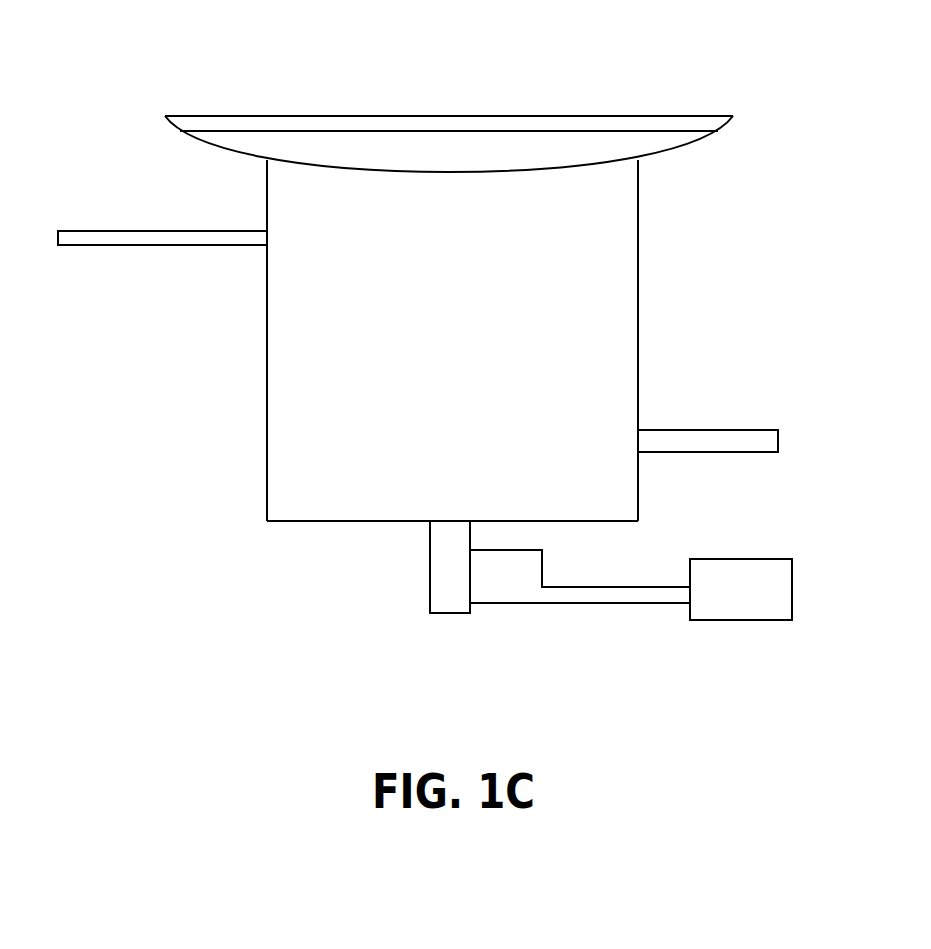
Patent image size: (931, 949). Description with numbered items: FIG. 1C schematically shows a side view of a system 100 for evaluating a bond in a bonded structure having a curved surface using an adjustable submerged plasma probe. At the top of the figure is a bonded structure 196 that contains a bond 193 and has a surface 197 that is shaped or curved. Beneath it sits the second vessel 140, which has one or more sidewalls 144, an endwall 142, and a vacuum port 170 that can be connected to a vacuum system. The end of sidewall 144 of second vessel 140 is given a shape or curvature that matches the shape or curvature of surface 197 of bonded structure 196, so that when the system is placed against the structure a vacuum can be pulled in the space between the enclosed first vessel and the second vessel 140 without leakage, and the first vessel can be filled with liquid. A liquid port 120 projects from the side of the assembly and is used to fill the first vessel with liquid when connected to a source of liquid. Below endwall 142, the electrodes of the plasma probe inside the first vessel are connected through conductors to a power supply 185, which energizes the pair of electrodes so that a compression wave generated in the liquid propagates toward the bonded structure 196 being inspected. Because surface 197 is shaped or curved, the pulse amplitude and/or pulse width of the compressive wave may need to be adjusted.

The system 100 is at (398, 82).
The bond 193 is at (225, 130).
The bonded structure 196 is at (592, 143).
The surface 197 is at (698, 150).
The second vessel 140 is at (642, 318).
The sidewall 144 is at (323, 170).
The endwall 142 is at (315, 525).
The vacuum port 170 is at (167, 225).
The liquid port 120 is at (745, 425).
The power supply 185 is at (755, 604).